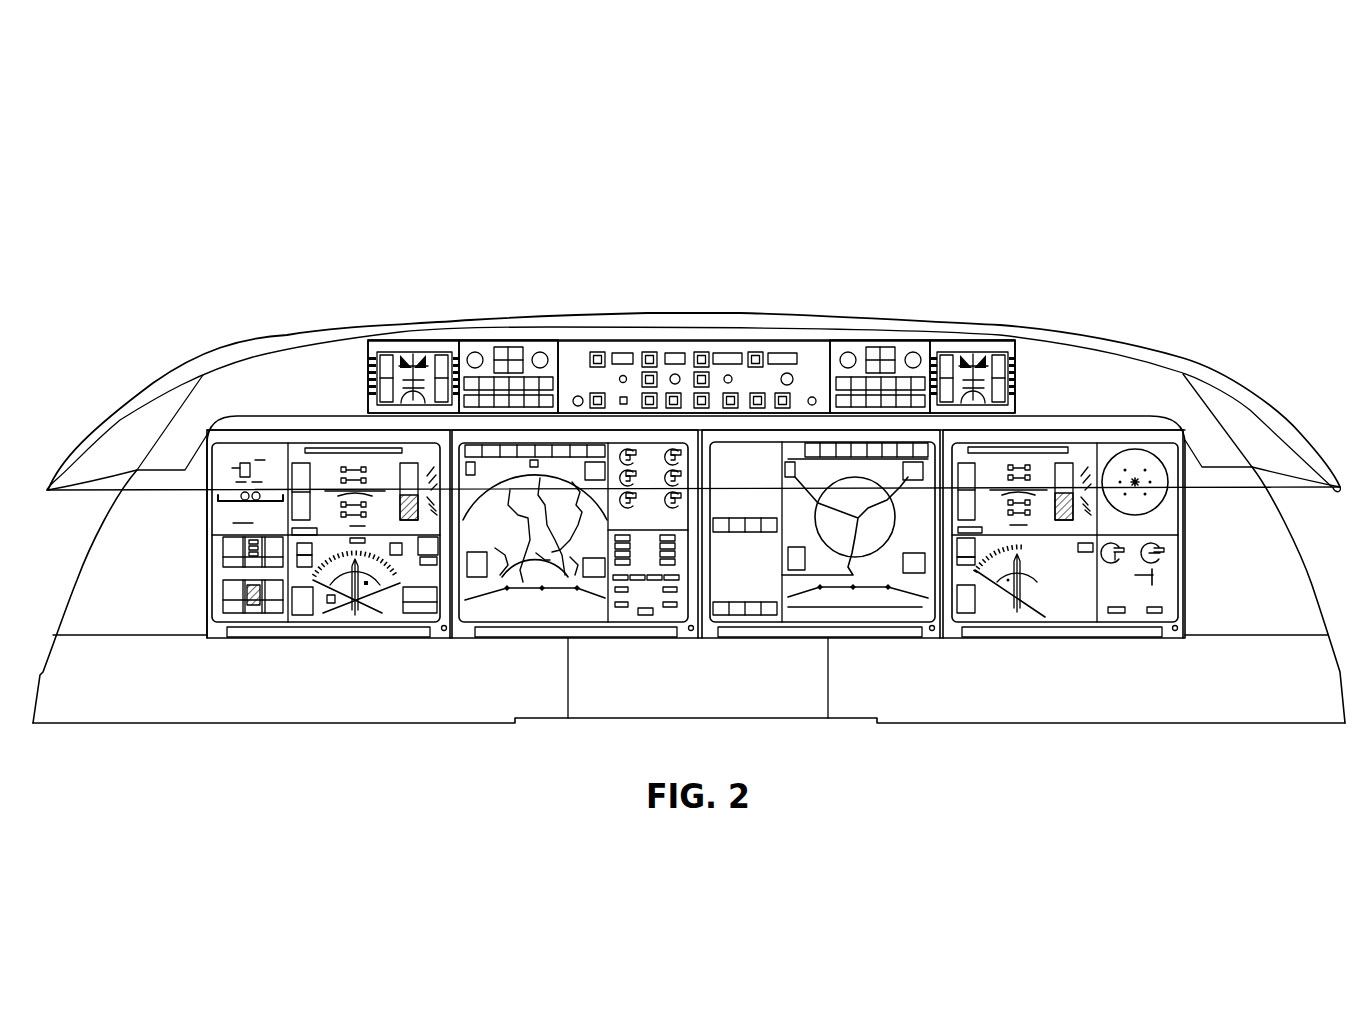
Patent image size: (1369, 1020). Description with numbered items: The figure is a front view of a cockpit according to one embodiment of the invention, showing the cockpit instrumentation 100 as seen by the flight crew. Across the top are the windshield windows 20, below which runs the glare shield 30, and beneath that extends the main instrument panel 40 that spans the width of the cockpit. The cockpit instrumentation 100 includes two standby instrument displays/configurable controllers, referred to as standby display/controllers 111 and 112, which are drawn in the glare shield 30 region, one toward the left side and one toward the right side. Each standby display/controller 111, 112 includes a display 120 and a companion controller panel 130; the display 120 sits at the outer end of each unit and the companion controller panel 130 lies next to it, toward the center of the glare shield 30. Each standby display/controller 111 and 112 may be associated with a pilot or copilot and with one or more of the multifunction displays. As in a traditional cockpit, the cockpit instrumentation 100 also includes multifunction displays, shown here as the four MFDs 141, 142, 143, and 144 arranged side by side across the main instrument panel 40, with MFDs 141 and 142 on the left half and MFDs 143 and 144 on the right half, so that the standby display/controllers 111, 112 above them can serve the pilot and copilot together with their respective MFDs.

The windshield windows 20 is at (435, 222).
The glare shield 30 is at (326, 358).
The main instrument panel 40 is at (70, 577).
The cockpit instrumentation 100 is at (865, 166).
The standby display/controller 111 is at (365, 309).
The standby display/controller 112 is at (825, 309).
The display 120 is at (368, 385).
The companion controller panel 130 is at (548, 340).
The MFD 141 is at (318, 640).
The MFD 142 is at (512, 640).
The MFD 143 is at (868, 640).
The MFD 144 is at (1066, 640).